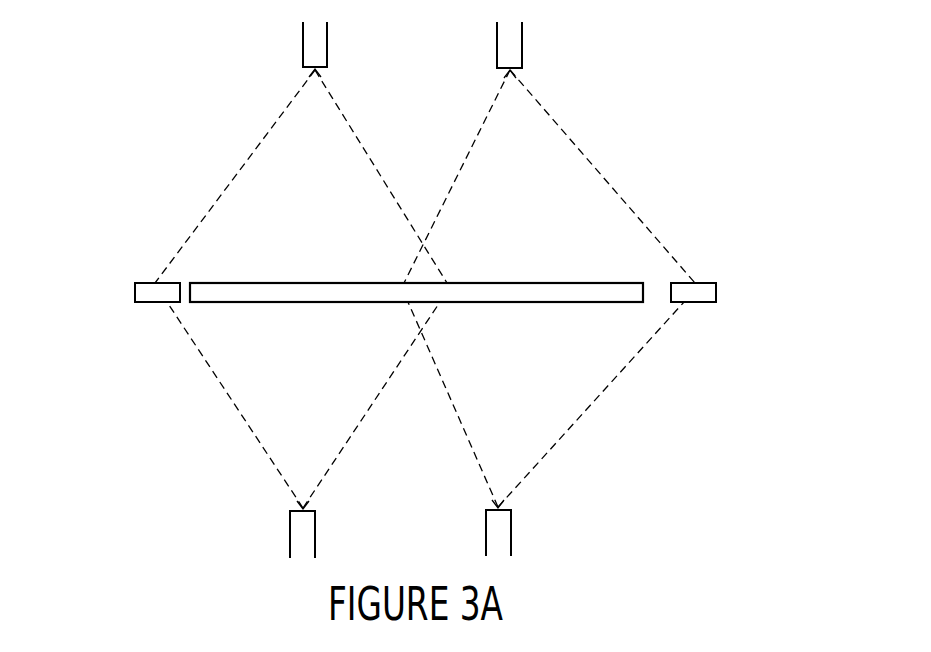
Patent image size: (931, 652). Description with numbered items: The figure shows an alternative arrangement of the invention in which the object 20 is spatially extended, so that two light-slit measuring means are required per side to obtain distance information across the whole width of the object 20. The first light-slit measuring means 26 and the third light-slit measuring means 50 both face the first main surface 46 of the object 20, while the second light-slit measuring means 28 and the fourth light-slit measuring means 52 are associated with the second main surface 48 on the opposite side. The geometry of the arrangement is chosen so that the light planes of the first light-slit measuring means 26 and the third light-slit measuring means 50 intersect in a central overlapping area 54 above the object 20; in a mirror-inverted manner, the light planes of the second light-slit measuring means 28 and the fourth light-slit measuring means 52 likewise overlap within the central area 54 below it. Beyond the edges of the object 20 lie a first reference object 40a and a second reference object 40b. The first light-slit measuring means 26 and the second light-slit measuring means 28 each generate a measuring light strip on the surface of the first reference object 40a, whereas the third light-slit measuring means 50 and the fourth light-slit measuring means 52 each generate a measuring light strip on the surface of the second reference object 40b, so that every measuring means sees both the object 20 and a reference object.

The object 20 is at (628, 293).
The first light-slit measuring means 26 is at (303, 40).
The second light-slit measuring means 28 is at (290, 552).
The first reference object 40a is at (147, 292).
The second reference object 40b is at (705, 290).
The first main surface 46 is at (590, 275).
The second main surface 48 is at (590, 310).
The third light-slit measuring means 50 is at (523, 28).
The fourth light-slit measuring means 52 is at (513, 547).
The central overlapping area 54 is at (417, 145).